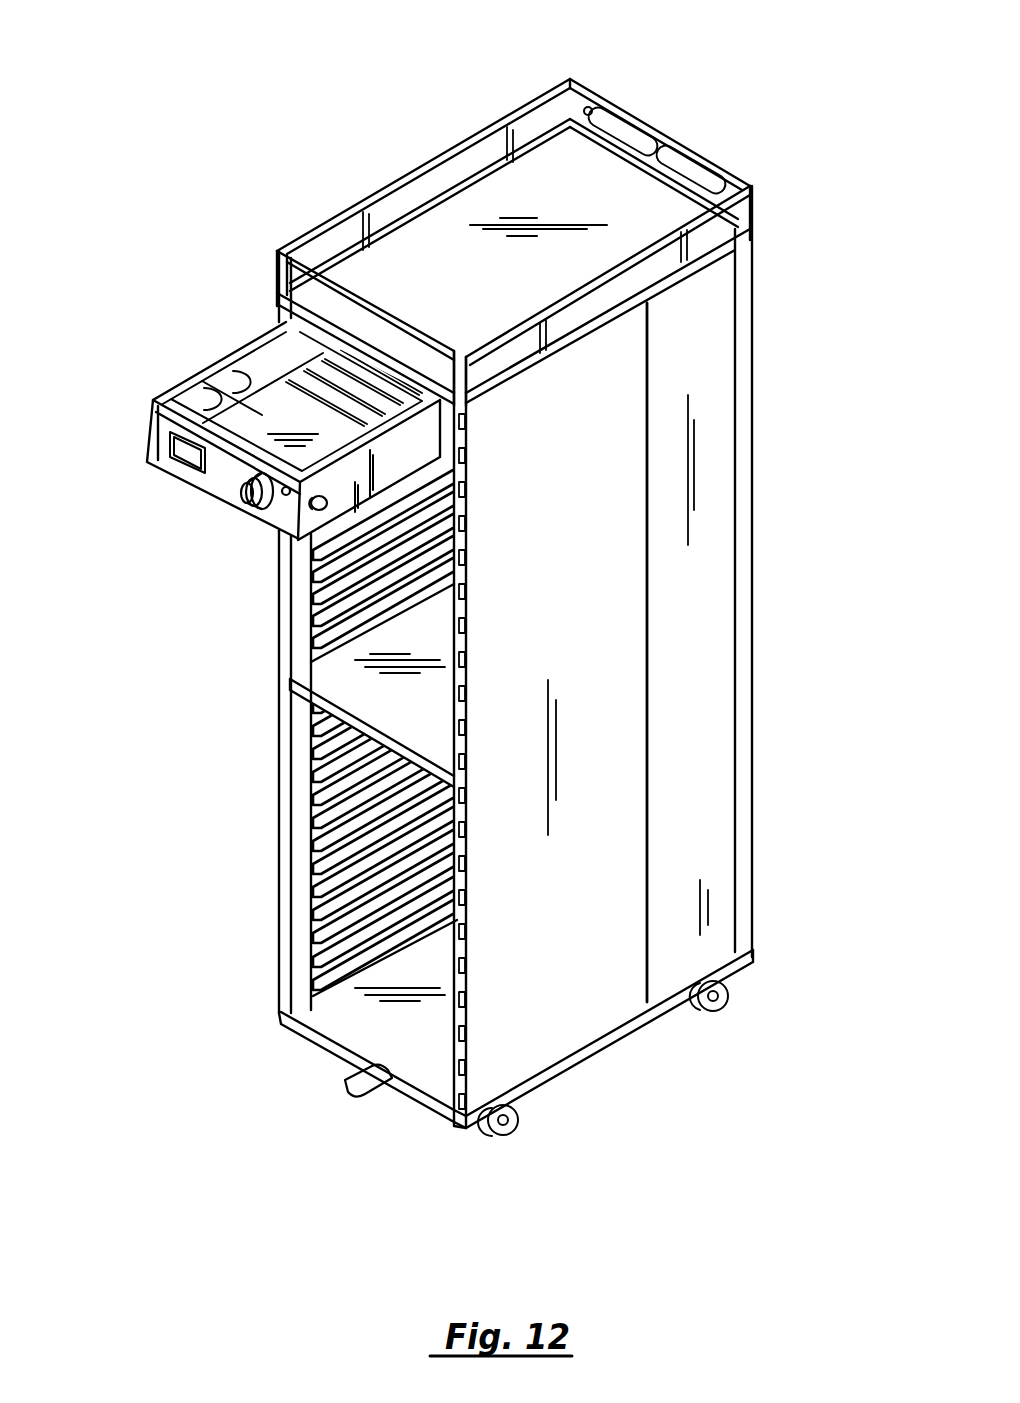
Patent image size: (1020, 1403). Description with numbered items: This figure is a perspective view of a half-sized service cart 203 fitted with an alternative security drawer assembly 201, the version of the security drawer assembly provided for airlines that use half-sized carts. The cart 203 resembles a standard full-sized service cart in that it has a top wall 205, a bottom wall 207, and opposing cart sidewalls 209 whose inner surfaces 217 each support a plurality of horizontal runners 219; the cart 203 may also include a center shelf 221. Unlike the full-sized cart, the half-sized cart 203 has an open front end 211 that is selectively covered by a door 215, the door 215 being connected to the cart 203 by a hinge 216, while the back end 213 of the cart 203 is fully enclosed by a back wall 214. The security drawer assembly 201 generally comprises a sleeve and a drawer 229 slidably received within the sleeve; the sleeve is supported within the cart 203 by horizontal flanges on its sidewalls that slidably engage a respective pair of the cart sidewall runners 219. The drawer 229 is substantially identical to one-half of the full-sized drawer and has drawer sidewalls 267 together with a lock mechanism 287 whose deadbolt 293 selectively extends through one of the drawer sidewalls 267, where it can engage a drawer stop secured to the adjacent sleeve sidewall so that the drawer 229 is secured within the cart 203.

The alternative security drawer assembly 201 is at (222, 300).
The half-sized service cart 203 is at (482, 130).
The top wall 205 is at (434, 267).
The bottom wall 207 is at (410, 1093).
The cart sidewalls 209 is at (663, 973).
The open front end 211 is at (385, 1020).
The back end 213 is at (752, 305).
The back wall 214 is at (667, 168).
The door 215 is at (652, 885).
The hinge 216 is at (465, 603).
The inner surfaces 217 is at (318, 983).
The horizontal runners 219 is at (320, 843).
The center shelf 221 is at (353, 687).
The drawer 229 is at (237, 503).
The drawer sidewalls 267 is at (388, 467).
The lock mechanism 287 is at (248, 503).
The deadbolt 293 is at (306, 515).